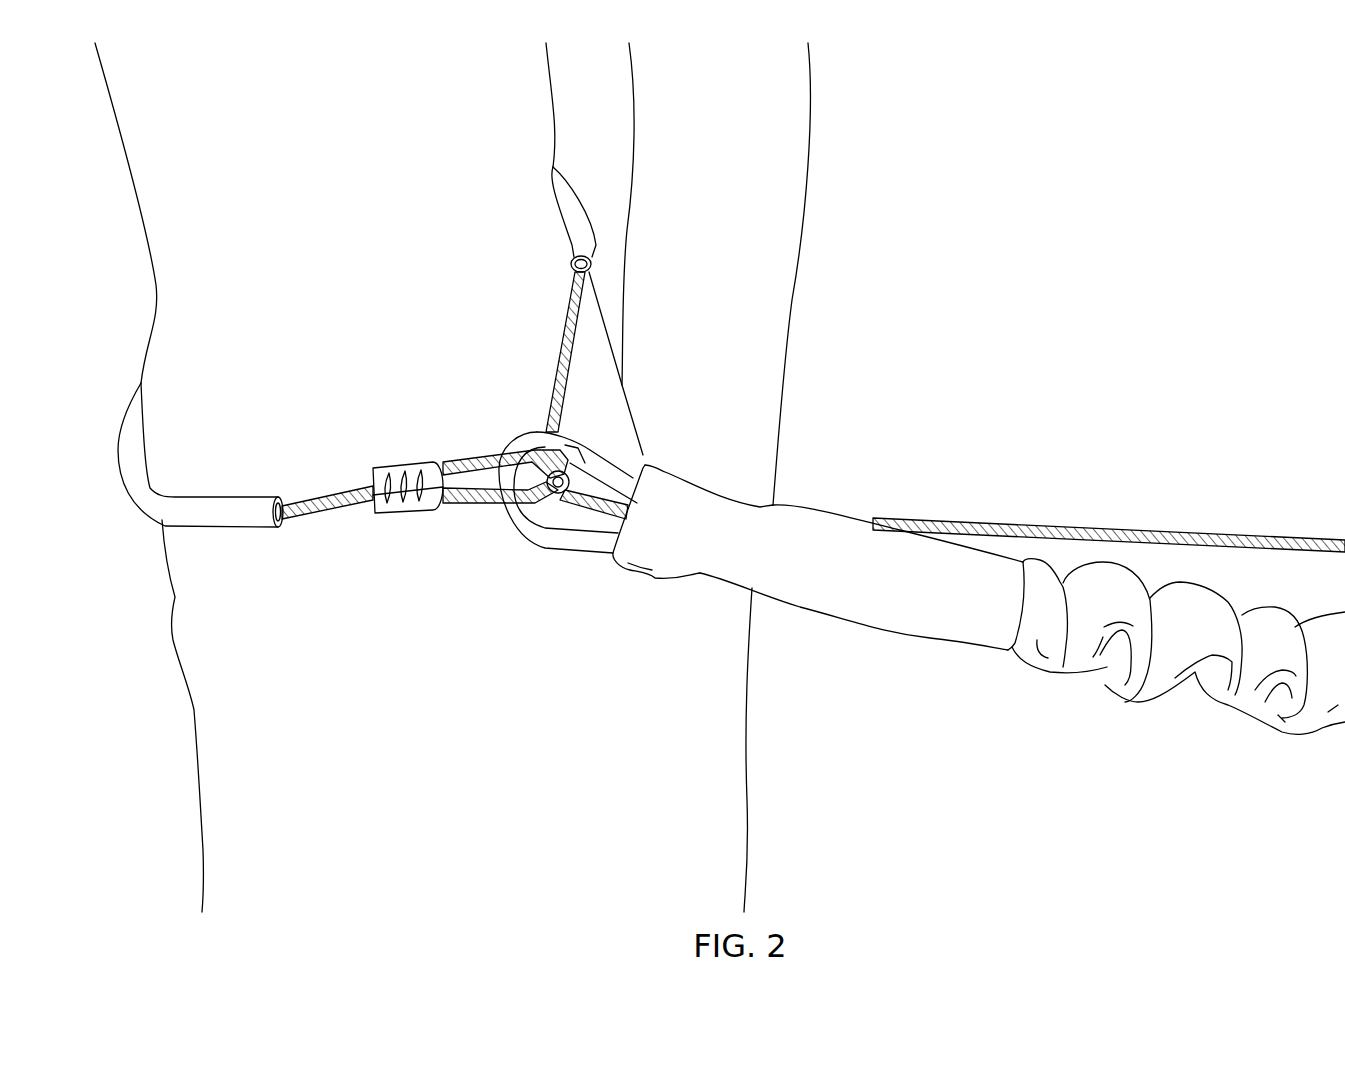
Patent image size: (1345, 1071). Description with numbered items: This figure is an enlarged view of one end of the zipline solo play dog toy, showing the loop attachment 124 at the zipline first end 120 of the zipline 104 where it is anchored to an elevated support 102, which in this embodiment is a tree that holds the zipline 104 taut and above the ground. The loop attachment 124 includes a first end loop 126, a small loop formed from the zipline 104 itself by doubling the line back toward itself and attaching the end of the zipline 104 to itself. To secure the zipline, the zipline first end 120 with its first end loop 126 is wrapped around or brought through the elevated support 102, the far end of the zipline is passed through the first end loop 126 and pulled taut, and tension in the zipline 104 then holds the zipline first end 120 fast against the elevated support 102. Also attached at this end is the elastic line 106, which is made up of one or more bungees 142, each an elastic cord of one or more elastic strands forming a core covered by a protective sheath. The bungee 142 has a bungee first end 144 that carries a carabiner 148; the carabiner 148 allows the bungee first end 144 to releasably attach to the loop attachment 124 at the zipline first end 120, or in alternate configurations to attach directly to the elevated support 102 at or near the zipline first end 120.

The elevated support 102 is at (730, 800).
The zipline 104 is at (1165, 525).
The elastic line 106 is at (979, 604).
The zipline first end 120 is at (958, 306).
The loop attachment 124 is at (307, 513).
The first end loop 126 is at (470, 505).
The bungee 142 is at (1108, 676).
The bungee first end 144 is at (678, 590).
The carabiner 148 is at (605, 465).